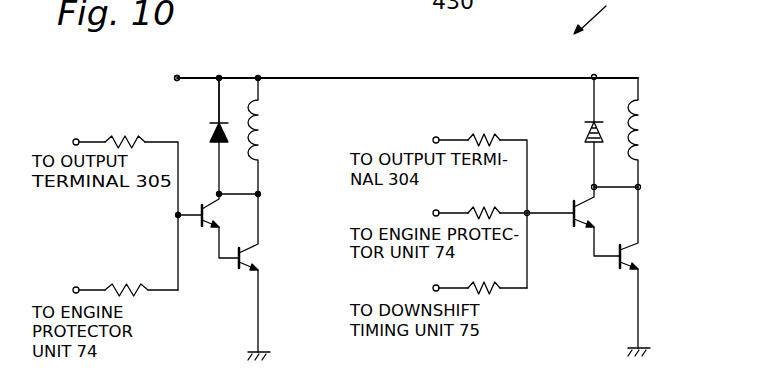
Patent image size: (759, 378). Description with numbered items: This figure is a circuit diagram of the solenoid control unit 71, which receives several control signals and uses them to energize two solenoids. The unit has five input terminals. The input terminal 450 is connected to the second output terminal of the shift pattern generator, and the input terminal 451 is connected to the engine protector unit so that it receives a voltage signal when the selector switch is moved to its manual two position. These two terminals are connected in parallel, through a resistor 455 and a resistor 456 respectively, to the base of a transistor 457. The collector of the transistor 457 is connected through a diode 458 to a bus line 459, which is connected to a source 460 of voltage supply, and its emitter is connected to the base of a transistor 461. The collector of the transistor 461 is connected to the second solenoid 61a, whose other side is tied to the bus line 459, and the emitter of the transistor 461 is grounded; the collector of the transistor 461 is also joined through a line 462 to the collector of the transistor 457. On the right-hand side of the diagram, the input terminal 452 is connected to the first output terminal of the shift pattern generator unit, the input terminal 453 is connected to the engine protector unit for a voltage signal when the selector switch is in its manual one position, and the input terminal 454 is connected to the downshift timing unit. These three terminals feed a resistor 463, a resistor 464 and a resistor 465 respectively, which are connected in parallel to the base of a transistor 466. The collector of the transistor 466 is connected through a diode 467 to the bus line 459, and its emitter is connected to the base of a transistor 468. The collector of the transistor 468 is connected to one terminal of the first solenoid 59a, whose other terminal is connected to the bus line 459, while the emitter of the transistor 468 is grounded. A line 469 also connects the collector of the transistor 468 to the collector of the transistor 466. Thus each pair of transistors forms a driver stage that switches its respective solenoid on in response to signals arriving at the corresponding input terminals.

The solenoid control unit 71 is at (630, 14).
The source of voltage supply 460 is at (177, 75).
The bus line 459 is at (219, 76).
The diode 458 is at (212, 122).
The second solenoid 61a is at (263, 110).
The input terminal 450 is at (76, 139).
The resistor 455 is at (144, 139).
The input terminal 451 is at (76, 287).
The resistor 456 is at (143, 293).
The transistor 457 is at (205, 229).
The line 462 is at (248, 194).
The transistor 461 is at (243, 272).
The input terminal 452 is at (434, 138).
The resistor 463 is at (498, 138).
The input terminal 453 is at (433, 212).
The resistor 464 is at (499, 211).
The input terminal 454 is at (433, 287).
The resistor 465 is at (499, 286).
The first solenoid 59a is at (634, 106).
The diode 467 is at (590, 122).
The line 469 is at (616, 185).
The transistor 466 is at (573, 205).
The transistor 468 is at (612, 259).